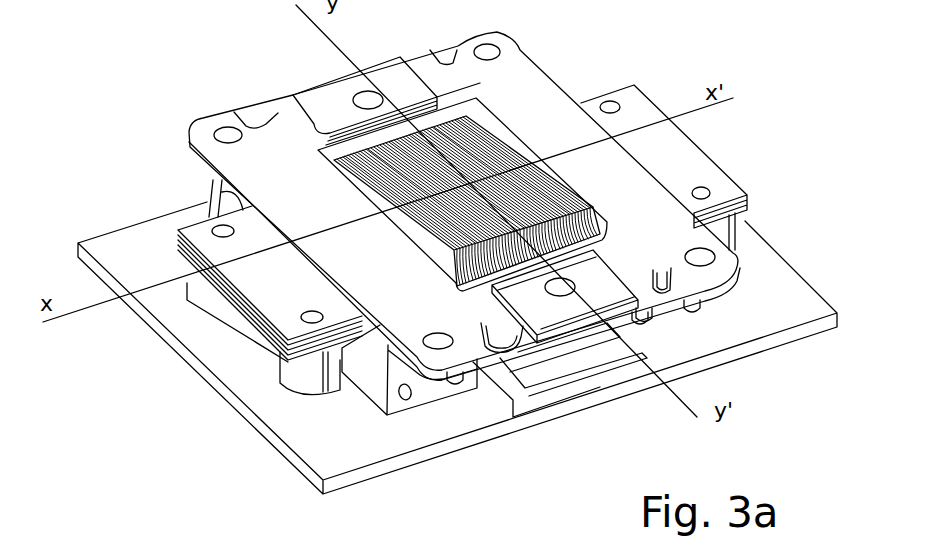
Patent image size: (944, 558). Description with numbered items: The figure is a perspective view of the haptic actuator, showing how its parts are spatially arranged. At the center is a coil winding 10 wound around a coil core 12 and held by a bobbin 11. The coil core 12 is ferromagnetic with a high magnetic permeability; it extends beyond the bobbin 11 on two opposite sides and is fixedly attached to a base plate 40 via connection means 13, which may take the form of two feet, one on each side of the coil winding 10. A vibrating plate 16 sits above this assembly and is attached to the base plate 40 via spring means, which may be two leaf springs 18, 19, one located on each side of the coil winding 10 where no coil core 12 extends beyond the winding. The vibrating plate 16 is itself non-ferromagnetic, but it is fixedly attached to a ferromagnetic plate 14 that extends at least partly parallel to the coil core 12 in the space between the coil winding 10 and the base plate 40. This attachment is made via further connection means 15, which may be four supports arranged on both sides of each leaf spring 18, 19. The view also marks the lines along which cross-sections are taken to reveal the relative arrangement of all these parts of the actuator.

The coil winding 10 is at (557, 80).
The bobbin 11 is at (570, 193).
The coil core 12 is at (305, 307).
The connection means 13 is at (262, 357).
The ferromagnetic plate 14 is at (350, 362).
The further connection means 15 is at (420, 383).
The vibrating plate 16 is at (388, 274).
The leaf spring 18 is at (598, 283).
The leaf spring 19 is at (333, 102).
The base plate 40 is at (347, 457).